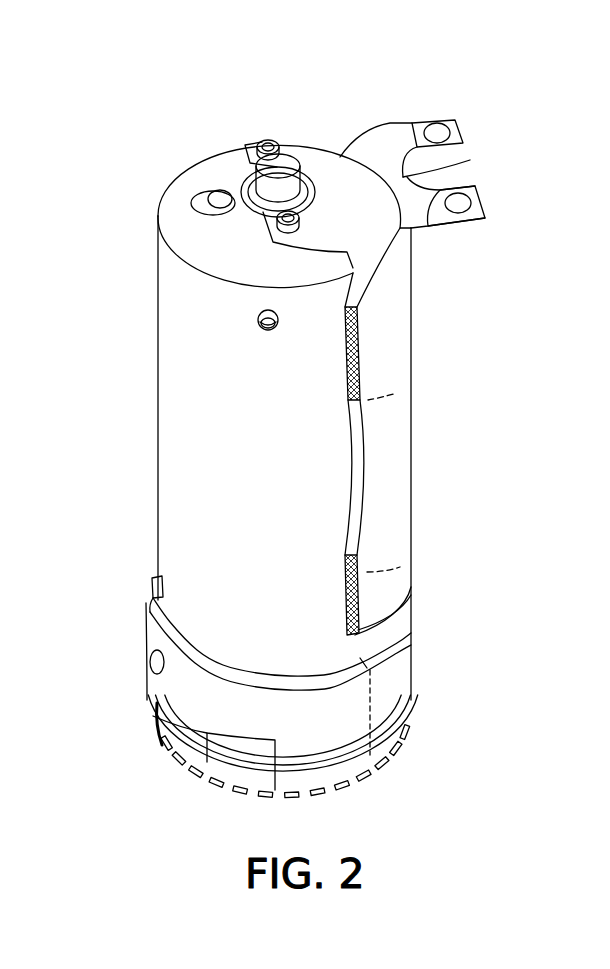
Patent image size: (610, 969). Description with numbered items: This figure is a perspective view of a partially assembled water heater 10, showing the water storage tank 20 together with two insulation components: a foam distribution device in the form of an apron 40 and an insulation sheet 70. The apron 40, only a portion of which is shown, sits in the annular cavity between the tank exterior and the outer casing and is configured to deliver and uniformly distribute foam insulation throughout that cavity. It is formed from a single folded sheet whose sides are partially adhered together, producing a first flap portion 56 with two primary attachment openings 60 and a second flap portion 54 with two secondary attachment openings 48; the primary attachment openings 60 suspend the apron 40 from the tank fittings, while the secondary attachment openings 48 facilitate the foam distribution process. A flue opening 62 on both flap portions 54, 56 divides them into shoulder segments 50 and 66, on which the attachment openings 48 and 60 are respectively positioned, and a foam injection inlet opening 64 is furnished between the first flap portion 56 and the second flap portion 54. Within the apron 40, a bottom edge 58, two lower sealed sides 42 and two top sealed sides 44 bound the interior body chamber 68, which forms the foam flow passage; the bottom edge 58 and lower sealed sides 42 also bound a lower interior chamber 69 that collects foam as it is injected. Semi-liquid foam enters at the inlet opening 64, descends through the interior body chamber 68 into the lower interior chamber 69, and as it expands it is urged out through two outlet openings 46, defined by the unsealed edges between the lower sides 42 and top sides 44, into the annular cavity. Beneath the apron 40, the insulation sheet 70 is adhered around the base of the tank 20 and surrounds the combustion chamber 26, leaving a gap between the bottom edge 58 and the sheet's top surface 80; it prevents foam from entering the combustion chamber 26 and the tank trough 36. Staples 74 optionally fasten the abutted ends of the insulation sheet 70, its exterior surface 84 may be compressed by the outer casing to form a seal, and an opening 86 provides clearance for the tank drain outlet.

The water heater 10 is at (130, 177).
The water storage tank 20 is at (245, 465).
The combustion chamber 26 is at (195, 732).
The tank trough 36 is at (150, 715).
The apron 40 is at (397, 415).
The lower sealed sides 42 is at (355, 595).
The top sealed sides 44 is at (355, 347).
The outlet openings 46 is at (360, 468).
The secondary attachment openings 48 is at (441, 122).
The shoulder segment 50 is at (480, 207).
The second flap portion 54 is at (433, 215).
The first flap portion 56 is at (358, 183).
The bottom edge 58 is at (360, 640).
The primary attachment openings 60 is at (324, 162).
The flue opening 62 is at (470, 160).
The foam injection inlet opening 64 is at (373, 175).
The shoulder segment 66 is at (250, 185).
The interior body chamber 68 is at (397, 393).
The lower interior chamber 69 is at (400, 567).
The insulation sheet 70 is at (232, 705).
The staples 74 is at (390, 753).
The top surface 80 is at (150, 612).
The exterior surface 84 is at (330, 740).
The opening 86 is at (157, 675).